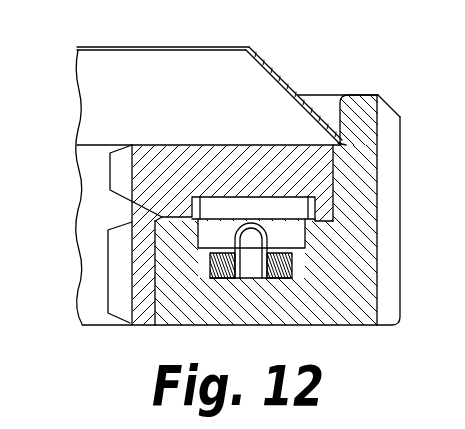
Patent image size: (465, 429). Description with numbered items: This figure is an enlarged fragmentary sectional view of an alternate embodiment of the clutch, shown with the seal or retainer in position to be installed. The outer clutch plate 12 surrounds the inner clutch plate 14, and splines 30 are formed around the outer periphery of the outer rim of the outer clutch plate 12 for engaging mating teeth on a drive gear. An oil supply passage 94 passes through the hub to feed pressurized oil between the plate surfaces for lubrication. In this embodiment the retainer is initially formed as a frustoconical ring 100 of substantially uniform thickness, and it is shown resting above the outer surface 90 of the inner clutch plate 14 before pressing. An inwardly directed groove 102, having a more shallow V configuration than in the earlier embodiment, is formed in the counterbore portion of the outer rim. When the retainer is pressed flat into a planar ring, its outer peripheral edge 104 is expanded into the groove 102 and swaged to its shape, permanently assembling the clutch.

The outer clutch plate 12 is at (337, 295).
The inner clutch plate 14 is at (232, 163).
The splines 30 is at (387, 183).
The outer surface 90 is at (113, 145).
The oil supply passage 94 is at (145, 217).
The frustoconical ring 100 is at (299, 92).
The inwardly directed groove 102 is at (350, 143).
The outer peripheral edge 104 is at (375, 148).